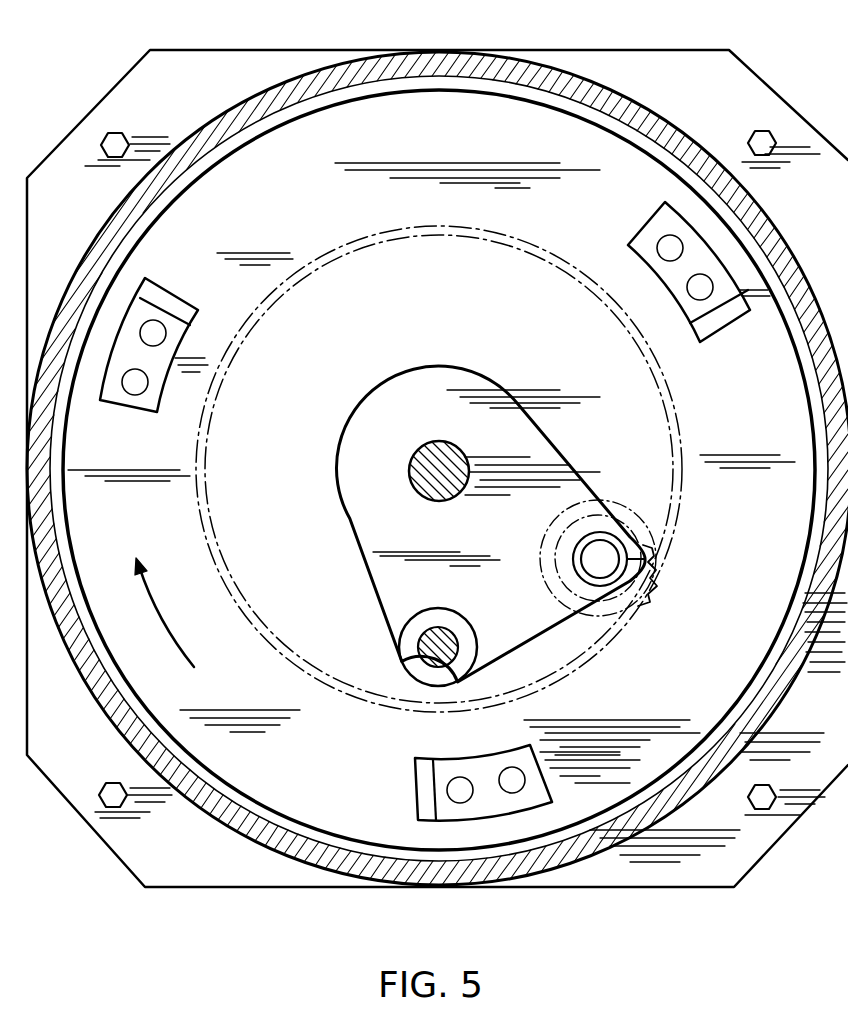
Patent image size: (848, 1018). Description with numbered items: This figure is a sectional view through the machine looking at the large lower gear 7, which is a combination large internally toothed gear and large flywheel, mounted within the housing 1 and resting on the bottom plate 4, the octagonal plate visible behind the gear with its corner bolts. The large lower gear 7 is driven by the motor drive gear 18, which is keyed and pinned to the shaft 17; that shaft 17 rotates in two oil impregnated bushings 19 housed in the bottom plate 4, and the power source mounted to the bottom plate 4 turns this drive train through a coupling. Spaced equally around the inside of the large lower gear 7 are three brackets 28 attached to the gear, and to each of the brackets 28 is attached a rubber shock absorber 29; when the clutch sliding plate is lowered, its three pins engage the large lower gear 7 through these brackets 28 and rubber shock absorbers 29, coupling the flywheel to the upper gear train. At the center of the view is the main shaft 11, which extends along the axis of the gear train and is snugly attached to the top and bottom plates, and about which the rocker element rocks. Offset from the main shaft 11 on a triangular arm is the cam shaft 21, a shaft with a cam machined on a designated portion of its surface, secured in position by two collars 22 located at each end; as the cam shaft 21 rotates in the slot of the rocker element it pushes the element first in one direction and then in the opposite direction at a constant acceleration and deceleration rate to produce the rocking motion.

The housing 1 is at (202, 137).
The bottom plate 4 is at (483, 373).
The large lower gear 7 is at (352, 103).
The main shaft 11 is at (423, 451).
The shaft 17 is at (657, 552).
The motor drive gear 18 is at (632, 605).
The oil impregnated bushings 19 is at (650, 568).
The cam shaft 21 is at (430, 663).
The collars 22 is at (402, 657).
The brackets 28 is at (128, 407).
The rubber shock absorbers 29 is at (152, 280).